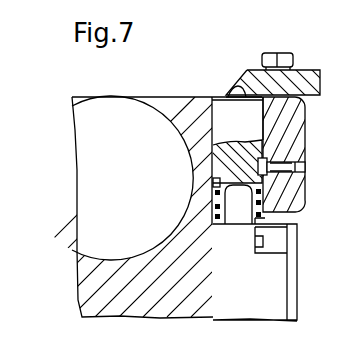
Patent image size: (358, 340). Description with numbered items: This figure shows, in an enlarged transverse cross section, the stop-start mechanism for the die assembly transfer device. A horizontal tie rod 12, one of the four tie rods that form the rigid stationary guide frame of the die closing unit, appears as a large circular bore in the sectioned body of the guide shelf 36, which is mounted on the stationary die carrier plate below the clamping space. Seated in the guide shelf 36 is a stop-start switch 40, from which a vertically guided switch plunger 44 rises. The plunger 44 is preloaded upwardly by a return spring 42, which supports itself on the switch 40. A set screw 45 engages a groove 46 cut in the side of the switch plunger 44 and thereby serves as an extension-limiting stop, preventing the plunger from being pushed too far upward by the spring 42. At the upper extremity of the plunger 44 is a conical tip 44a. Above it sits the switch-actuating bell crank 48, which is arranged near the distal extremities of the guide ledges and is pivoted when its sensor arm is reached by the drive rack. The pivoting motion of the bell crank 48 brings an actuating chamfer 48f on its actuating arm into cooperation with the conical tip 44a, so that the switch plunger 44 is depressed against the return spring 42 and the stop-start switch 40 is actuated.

The horizontal tie rod 12 is at (115, 182).
The guide shelf 36 is at (103, 298).
The stop-start switch 40 is at (262, 290).
The return spring 42 is at (255, 216).
The switch plunger 44 is at (223, 130).
The conical tip 44a is at (230, 93).
The set screw 45 is at (284, 167).
The groove 46 is at (259, 152).
The switch-actuating bell crank 48 is at (345, 58).
The actuating chamfer 48f is at (238, 82).